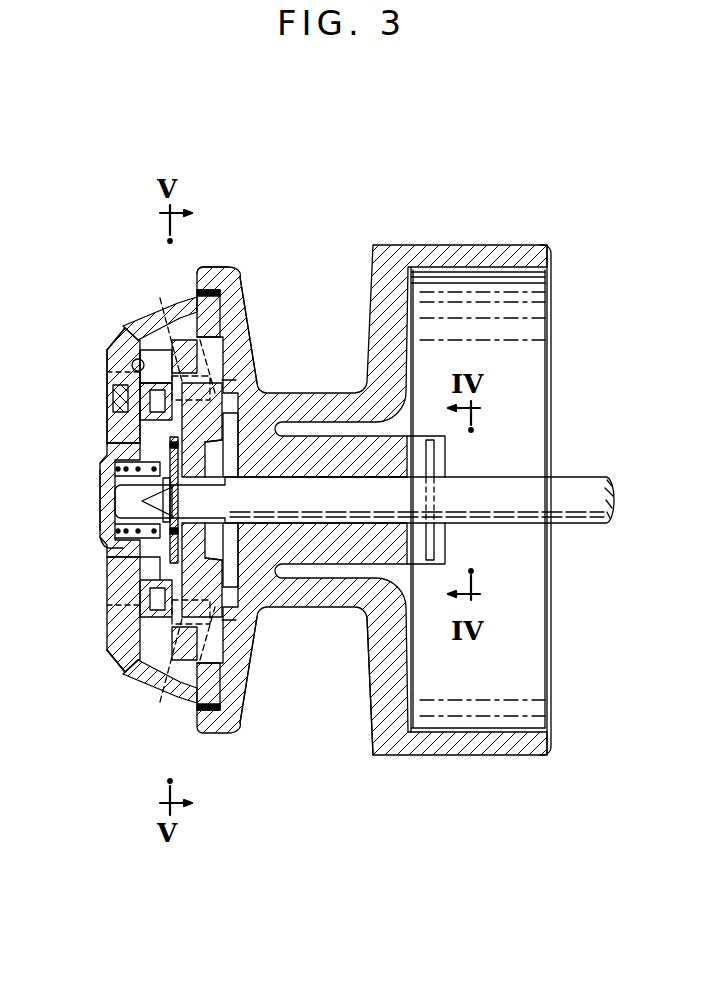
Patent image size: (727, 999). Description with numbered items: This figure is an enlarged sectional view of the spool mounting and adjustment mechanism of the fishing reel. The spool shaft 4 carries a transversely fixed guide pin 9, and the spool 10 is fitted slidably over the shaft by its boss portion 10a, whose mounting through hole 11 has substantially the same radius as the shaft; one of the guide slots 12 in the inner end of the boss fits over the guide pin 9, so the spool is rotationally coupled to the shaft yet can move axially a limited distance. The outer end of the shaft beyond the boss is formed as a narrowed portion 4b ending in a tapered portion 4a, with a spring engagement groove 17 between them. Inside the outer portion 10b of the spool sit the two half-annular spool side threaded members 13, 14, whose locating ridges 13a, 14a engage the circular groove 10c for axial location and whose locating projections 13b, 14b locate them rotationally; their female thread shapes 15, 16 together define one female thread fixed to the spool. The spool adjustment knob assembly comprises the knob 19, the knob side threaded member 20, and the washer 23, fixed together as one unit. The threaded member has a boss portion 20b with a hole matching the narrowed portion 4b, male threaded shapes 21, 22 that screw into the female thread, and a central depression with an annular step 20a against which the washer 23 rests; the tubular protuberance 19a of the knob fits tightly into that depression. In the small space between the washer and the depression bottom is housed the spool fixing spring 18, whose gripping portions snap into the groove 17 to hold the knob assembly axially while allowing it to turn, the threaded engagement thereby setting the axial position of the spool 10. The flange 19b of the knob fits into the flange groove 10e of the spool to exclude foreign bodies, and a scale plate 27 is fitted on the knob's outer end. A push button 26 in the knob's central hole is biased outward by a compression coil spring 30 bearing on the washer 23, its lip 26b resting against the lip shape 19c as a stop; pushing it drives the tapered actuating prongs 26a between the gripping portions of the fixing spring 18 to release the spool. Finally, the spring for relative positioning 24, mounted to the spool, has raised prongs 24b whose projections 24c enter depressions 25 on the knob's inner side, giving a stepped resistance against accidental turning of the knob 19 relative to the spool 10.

The spool shaft 4 is at (580, 485).
The tapered portion 4a is at (99, 523).
The narrowed portion 4b is at (240, 540).
The guide pin 9 is at (433, 543).
The spool 10 is at (382, 258).
The boss portion 10a is at (334, 548).
The outer portion 10b is at (107, 372).
The circular groove 10c is at (246, 346).
The flange groove 10e is at (212, 280).
The mounting through hole 11 is at (463, 480).
The guide slots 12 is at (432, 458).
The spool side threaded member 13 is at (222, 394).
The locating ridge 13a is at (162, 310).
The locating projection 13b is at (209, 370).
The spool side threaded member 14 is at (210, 620).
The locating ridge 14a is at (161, 705).
The locating projection 14b is at (207, 632).
The female thread 15 is at (201, 430).
The female thread 16 is at (201, 570).
The spring engagement groove 17 is at (187, 500).
The spool fixing spring 18 is at (183, 516).
The knob 19 is at (137, 327).
The tubular protuberance 19a is at (120, 563).
The flange 19b is at (140, 322).
The lip shape 19c is at (111, 548).
The knob side threaded member 20 is at (107, 408).
The annular step 20a is at (110, 428).
The boss portion 20b is at (218, 470).
The male threaded shape 21 is at (224, 382).
The male threaded shape 22 is at (216, 608).
The washer 23 is at (115, 583).
The spring for relative positioning 24 is at (112, 624).
The raised prongs 24b is at (110, 333).
The projections 24c is at (107, 355).
The depressions 25 is at (120, 668).
The push button 26 is at (100, 502).
The tapered actuating prongs 26a is at (100, 464).
The lip 26b is at (107, 446).
The scale plate 27 is at (107, 392).
The compression coil spring 30 is at (102, 478).